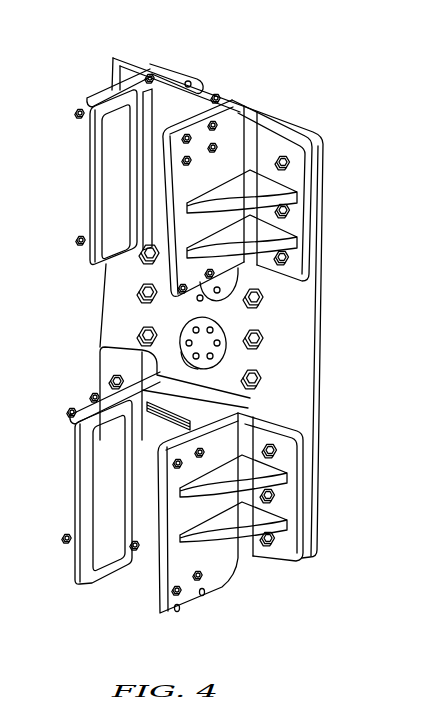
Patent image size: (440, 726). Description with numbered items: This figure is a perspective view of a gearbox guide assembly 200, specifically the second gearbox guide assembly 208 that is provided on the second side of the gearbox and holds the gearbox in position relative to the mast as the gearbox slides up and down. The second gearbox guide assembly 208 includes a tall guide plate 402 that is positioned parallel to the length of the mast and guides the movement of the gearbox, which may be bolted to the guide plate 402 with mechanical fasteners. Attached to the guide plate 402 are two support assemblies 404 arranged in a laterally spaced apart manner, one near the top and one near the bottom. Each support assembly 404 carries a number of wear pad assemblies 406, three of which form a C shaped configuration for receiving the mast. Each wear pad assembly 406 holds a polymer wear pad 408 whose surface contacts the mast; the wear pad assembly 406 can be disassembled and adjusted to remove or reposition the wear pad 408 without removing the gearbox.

The gearbox guide assembly 200 is at (343, 64).
The second gearbox guide assembly 208 is at (310, 118).
The guide plate 402 is at (320, 317).
The support assembly 404 is at (298, 181).
The wear pad assembly 406 is at (95, 81).
The wear pad 408 is at (160, 203).